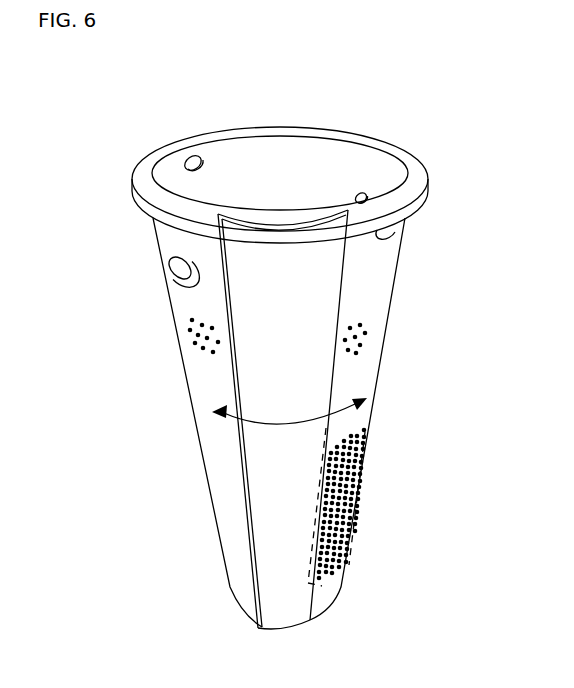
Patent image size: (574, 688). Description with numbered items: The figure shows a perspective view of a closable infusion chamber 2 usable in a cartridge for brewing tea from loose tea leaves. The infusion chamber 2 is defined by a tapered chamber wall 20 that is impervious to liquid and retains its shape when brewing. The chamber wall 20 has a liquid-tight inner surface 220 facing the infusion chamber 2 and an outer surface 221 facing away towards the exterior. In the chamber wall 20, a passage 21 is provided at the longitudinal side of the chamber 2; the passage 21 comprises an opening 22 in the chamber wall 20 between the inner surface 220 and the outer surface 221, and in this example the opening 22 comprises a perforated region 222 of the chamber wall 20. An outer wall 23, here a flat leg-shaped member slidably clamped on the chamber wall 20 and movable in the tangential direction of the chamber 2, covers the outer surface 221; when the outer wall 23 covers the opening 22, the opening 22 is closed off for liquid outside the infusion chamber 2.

The infusion chamber 2 is at (284, 164).
The chamber wall 20 is at (199, 373).
The passage 21 is at (395, 531).
The opening 22 is at (368, 455).
The outer wall 23 is at (250, 500).
The inner surface 220 is at (377, 178).
The outer surface 221 is at (225, 311).
The perforated region 222 is at (324, 447).